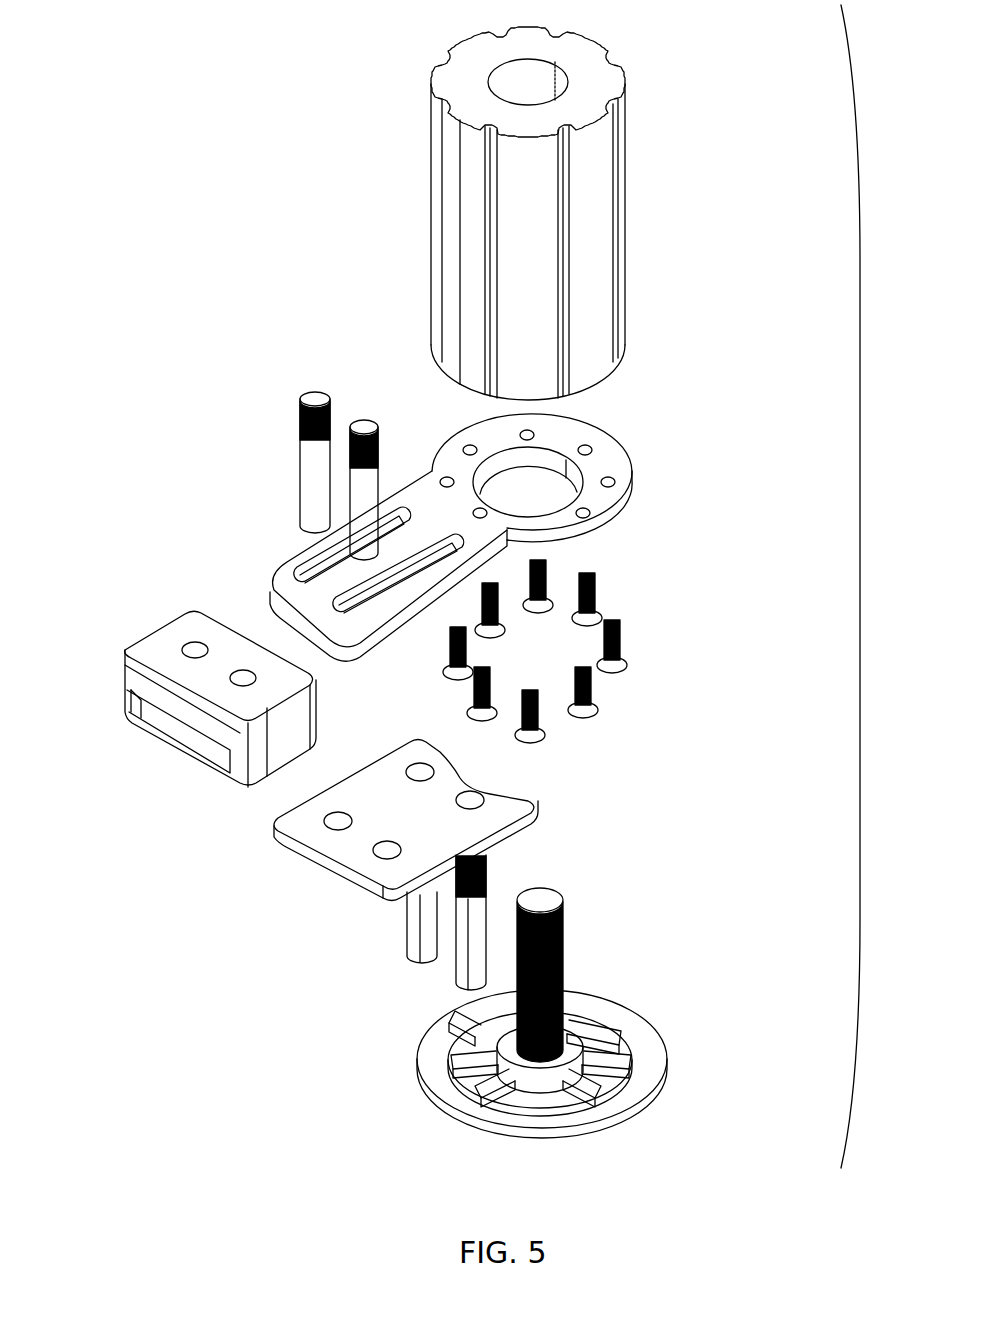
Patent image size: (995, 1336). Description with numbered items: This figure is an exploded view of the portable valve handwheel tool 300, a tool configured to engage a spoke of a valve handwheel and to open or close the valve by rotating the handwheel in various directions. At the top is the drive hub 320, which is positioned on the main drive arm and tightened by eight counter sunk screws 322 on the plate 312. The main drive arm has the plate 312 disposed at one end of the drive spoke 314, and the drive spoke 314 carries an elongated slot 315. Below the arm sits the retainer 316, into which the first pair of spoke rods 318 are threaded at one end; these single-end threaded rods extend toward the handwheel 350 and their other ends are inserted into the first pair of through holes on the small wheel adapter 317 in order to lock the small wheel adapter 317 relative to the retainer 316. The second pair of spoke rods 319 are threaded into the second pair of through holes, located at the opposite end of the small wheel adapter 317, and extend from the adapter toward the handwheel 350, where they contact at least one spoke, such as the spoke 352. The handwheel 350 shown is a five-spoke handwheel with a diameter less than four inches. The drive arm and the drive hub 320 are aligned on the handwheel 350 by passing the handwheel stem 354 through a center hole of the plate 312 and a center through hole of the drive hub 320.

The portable valve handwheel tool 300 is at (860, 582).
The plate 312 is at (593, 466).
The drive spoke 314 is at (305, 597).
The slot 315 is at (320, 557).
The retainer 316 is at (163, 645).
The small wheel adapter 317 is at (345, 845).
The first pair of spoke rods 318 is at (297, 460).
The second pair of spoke rods 319 is at (405, 928).
The drive hub 320 is at (427, 240).
The counter sunk screws 322 is at (642, 636).
The handwheel 350 is at (640, 1057).
The spoke 352 is at (497, 1088).
The handwheel stem 354 is at (565, 947).